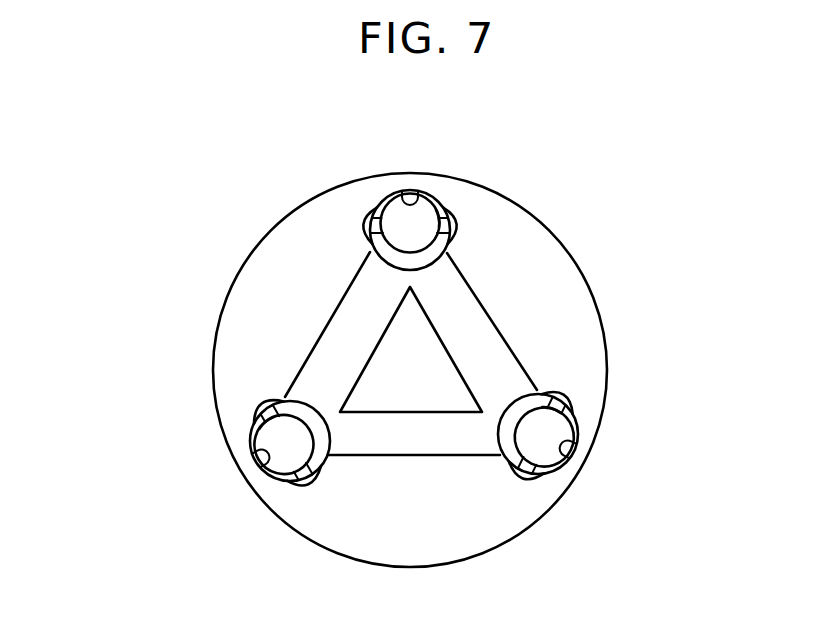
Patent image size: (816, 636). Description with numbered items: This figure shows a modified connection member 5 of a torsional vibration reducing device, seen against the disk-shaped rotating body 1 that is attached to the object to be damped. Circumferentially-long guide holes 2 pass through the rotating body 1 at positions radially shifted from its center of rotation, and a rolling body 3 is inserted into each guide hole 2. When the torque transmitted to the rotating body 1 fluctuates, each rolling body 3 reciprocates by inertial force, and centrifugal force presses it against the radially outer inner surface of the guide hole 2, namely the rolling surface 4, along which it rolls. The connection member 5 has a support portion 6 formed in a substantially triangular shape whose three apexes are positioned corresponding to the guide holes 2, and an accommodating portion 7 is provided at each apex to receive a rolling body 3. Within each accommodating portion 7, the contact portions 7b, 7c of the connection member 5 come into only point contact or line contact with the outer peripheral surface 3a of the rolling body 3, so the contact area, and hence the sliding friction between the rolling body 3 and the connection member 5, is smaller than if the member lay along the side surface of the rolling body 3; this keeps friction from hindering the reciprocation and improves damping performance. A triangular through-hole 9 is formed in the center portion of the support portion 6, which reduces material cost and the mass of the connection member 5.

The rotating body 1 is at (522, 218).
The guide hole 2 is at (457, 215).
The rolling body 3 is at (403, 215).
The outer peripheral surface 3a is at (445, 213).
The rolling surface 4 is at (402, 198).
The connection member 5 is at (613, 217).
The support portion 6 is at (502, 357).
The accommodating portion 7 is at (419, 362).
The contact portion 7b is at (462, 217).
The contact portion 7c is at (363, 217).
The triangular through-hole 9 is at (443, 352).